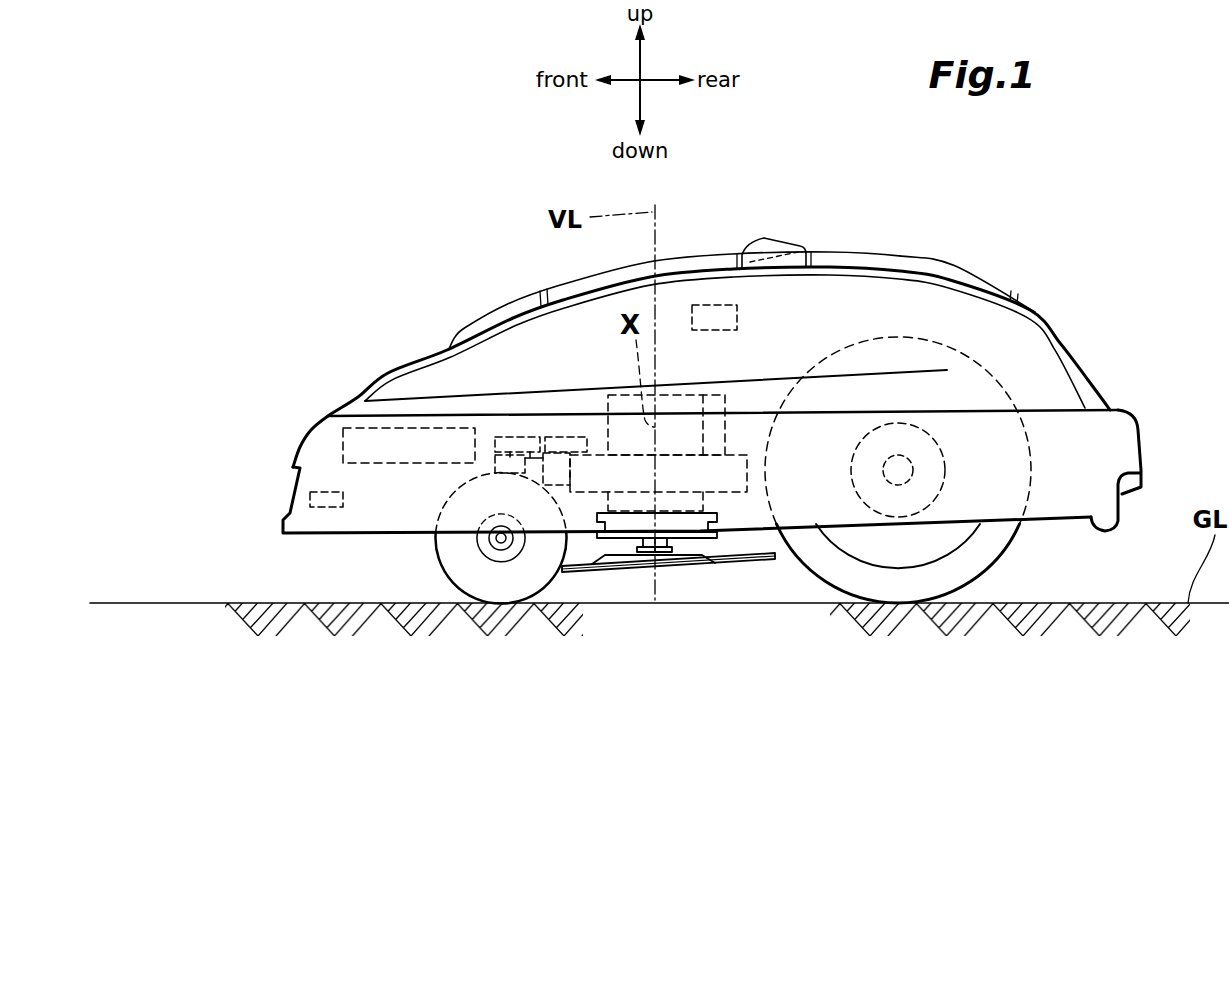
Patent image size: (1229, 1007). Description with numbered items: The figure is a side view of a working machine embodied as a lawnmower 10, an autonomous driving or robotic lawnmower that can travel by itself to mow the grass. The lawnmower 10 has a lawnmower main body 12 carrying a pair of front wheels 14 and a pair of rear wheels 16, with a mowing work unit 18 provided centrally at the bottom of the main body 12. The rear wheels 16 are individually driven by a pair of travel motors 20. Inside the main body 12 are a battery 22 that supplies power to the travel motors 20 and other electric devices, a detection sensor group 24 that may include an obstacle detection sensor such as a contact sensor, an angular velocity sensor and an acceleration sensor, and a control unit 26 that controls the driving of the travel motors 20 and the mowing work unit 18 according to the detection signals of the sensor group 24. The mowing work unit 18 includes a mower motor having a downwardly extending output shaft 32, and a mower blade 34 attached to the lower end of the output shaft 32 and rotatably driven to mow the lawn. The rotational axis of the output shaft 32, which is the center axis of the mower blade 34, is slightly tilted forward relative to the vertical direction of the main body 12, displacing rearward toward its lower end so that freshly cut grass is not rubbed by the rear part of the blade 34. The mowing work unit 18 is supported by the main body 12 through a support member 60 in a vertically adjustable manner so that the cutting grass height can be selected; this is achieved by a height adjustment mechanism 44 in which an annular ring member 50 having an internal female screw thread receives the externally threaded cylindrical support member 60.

The lawnmower 10 is at (355, 255).
The lawnmower main body 12 is at (1110, 428).
The front wheels 14 is at (453, 563).
The rear wheels 16 is at (975, 560).
The mowing work unit 18 is at (712, 592).
The travel motors 20 is at (938, 447).
The battery 22 is at (418, 455).
The detection sensor group 24 is at (320, 490).
The control unit 26 is at (737, 318).
The output shaft 32 is at (672, 542).
The mower blade 34 is at (633, 562).
The height adjustment mechanism 44 is at (741, 420).
The annular ring member 50 is at (720, 485).
The support member 60 is at (608, 432).